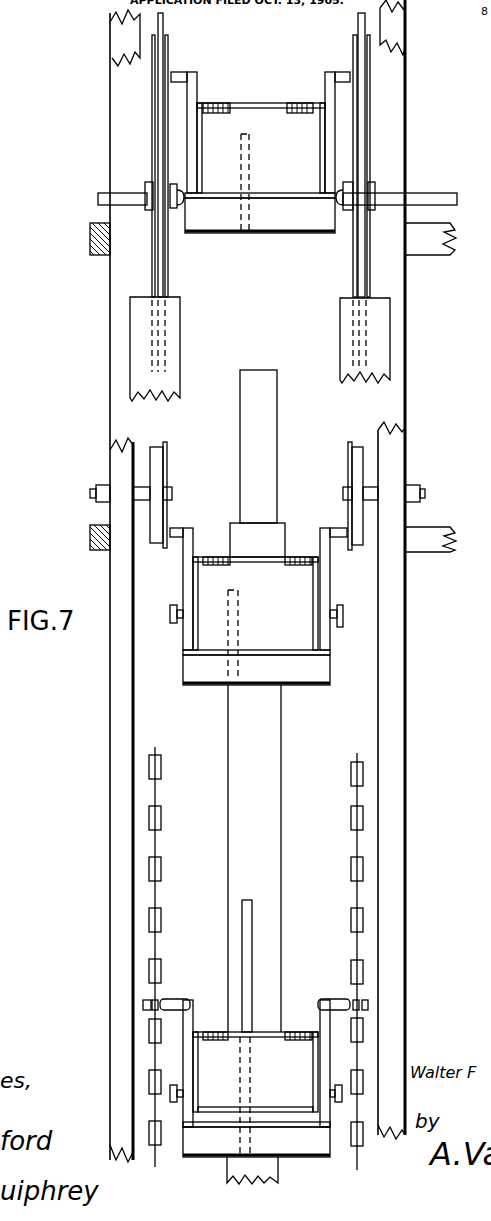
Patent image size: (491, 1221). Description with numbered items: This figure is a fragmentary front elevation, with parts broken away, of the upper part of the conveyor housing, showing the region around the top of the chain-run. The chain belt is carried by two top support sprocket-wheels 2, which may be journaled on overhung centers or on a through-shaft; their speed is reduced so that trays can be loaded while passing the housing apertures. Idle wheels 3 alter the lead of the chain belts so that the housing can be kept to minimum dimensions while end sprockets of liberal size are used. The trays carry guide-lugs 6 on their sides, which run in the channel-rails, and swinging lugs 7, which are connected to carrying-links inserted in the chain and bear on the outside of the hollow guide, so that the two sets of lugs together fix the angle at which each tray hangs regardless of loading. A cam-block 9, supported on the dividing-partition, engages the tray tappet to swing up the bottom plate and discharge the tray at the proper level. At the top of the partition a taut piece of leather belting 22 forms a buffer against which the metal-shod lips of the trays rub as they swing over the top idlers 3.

The sprocket-wheels 2 is at (168, 53).
The idle wheels 3 is at (165, 472).
The guide-lugs 6 is at (169, 613).
The swinging lugs 7 is at (178, 83).
The cam-block 9 is at (256, 948).
The leather belting 22 is at (257, 463).